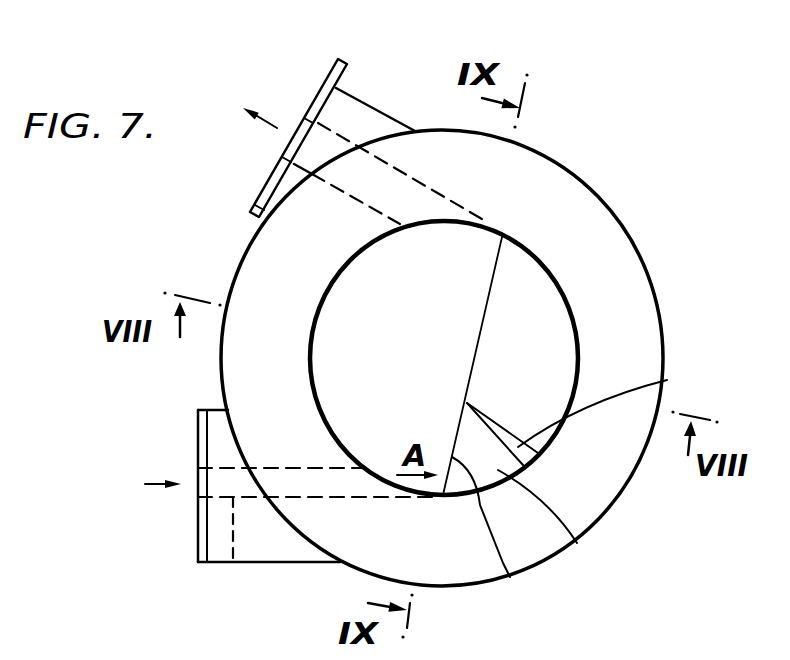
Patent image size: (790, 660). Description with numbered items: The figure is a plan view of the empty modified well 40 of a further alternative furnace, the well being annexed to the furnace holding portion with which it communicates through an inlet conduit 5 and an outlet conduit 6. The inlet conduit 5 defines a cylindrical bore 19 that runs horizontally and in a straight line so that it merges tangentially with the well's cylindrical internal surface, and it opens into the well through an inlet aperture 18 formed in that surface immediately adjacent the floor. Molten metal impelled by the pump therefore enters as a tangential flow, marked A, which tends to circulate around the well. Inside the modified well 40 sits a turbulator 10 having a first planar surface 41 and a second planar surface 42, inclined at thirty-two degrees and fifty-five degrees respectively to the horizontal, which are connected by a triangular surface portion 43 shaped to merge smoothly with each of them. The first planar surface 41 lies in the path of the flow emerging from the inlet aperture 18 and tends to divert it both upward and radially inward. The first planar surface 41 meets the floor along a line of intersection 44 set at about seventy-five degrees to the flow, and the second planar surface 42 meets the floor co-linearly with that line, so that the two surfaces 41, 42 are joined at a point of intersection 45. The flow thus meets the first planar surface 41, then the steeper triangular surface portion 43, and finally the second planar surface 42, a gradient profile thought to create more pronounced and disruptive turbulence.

The inlet conduit 5 is at (215, 565).
The outlet conduit 6 is at (353, 83).
The turbulator 10 is at (563, 340).
The inlet aperture 18 is at (375, 475).
The cylindrical bore 19 is at (233, 562).
The modified well 40 is at (150, 394).
The first planar surface 41 is at (577, 543).
The second planar surface 42 is at (521, 274).
The triangular surface portion 43 is at (667, 380).
The line of intersection 44 is at (510, 577).
The point of intersection 45 is at (467, 403).